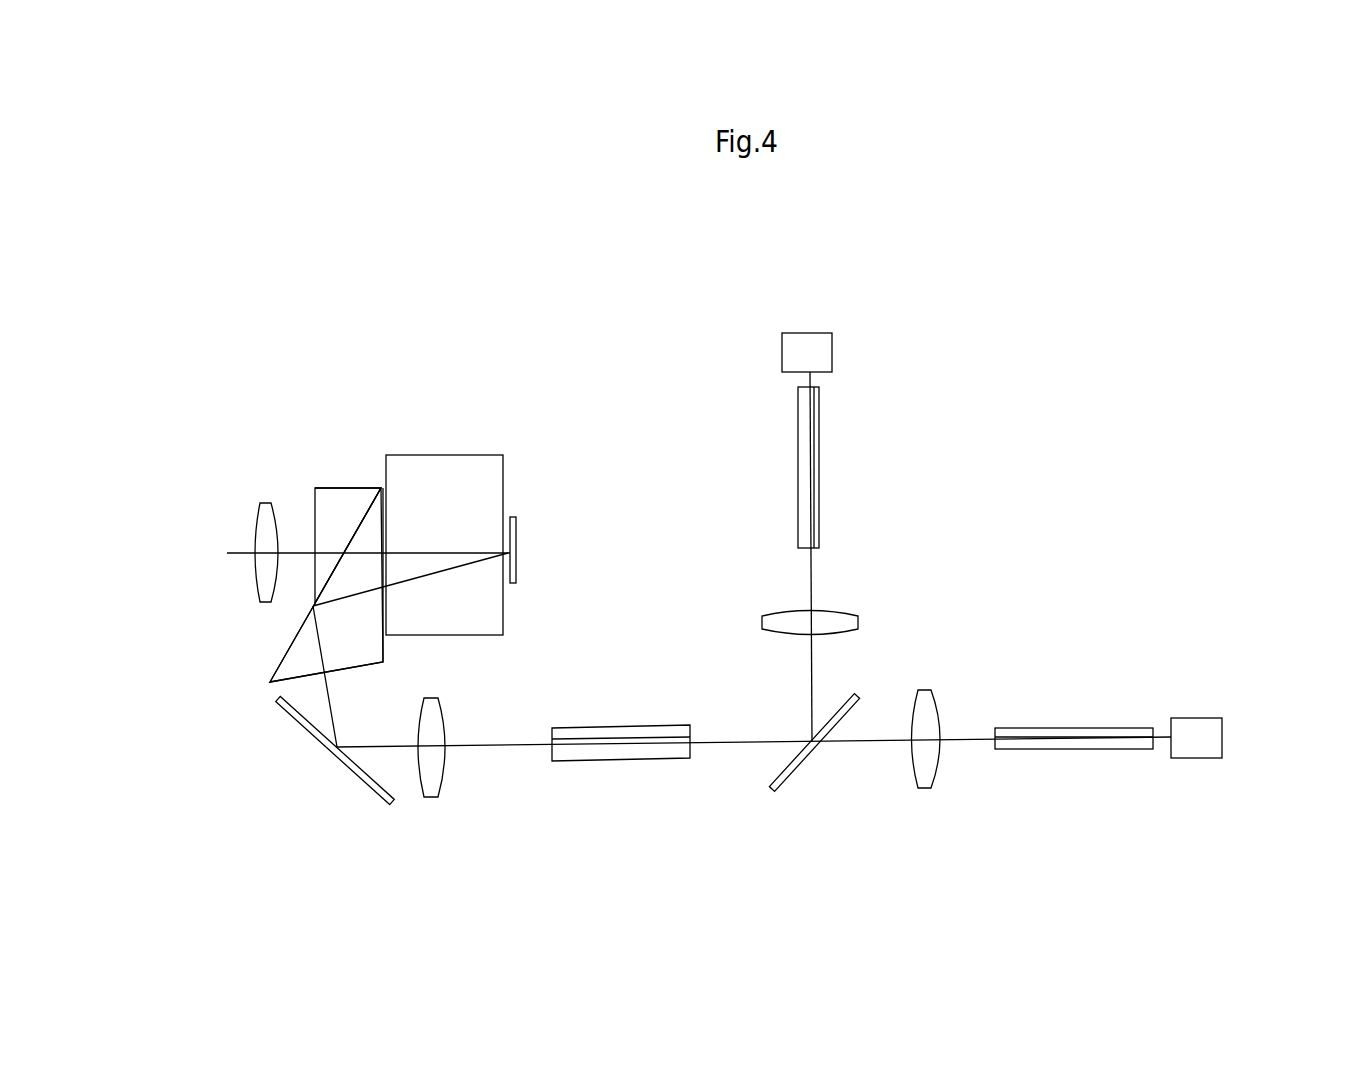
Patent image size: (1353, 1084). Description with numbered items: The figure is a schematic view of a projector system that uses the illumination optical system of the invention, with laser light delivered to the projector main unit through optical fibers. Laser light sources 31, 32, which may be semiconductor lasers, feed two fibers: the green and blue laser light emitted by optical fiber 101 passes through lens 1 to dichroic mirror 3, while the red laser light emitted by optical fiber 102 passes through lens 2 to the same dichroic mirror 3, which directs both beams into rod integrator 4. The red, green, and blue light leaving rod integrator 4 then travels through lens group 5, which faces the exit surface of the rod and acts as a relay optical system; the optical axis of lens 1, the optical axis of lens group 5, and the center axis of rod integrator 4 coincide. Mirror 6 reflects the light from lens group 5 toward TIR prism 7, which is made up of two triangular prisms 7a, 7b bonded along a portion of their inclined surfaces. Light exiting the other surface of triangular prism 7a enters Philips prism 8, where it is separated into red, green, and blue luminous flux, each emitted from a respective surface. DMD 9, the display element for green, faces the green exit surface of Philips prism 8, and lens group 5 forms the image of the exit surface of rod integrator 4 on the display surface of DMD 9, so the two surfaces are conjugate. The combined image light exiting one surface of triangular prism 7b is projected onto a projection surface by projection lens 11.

The lens 1 is at (931, 692).
The lens 2 is at (855, 613).
The dichroic mirror 3 is at (798, 768).
The rod integrator 4 is at (650, 727).
The lens group 5 is at (437, 698).
The mirror 6 is at (287, 717).
The TIR prism 7 is at (296, 534).
The triangular prism 7a is at (278, 664).
The triangular prism 7b is at (315, 487).
The Philips prism 8 is at (468, 455).
The DMD 9 is at (517, 533).
The projection lens 11 is at (257, 505).
The laser light source 31 is at (1208, 700).
The laser light source 32 is at (833, 350).
The optical fiber 101 is at (1058, 728).
The optical fiber 102 is at (820, 490).